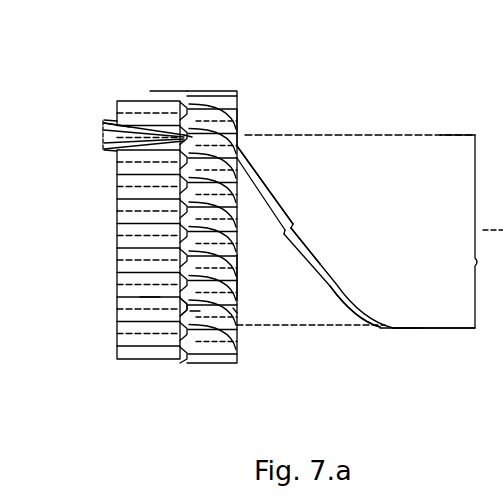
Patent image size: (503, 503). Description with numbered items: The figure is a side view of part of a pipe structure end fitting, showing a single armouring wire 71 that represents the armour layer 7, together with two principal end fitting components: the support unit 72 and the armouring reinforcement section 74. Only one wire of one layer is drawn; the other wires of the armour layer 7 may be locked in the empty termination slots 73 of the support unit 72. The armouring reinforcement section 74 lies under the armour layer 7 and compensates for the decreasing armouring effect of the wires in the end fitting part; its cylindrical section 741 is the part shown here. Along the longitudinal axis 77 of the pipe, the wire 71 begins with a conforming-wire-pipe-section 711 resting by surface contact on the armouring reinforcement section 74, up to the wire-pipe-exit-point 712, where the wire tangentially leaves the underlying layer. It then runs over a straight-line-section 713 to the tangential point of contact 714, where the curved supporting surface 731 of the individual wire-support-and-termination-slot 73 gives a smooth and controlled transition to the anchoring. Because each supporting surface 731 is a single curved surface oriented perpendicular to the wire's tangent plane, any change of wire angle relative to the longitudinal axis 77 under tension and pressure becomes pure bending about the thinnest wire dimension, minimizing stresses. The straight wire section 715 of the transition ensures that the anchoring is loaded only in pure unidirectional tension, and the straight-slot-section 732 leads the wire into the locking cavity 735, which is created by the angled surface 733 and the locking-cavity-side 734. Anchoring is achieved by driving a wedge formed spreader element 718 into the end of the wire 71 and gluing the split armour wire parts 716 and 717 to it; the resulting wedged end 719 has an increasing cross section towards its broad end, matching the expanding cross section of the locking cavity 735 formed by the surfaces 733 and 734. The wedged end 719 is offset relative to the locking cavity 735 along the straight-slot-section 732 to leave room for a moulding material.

The armour layer 7 is at (396, 331).
The armouring wire 71 is at (305, 237).
The conforming-wire-pipe-section 711 is at (338, 284).
The wire-pipe-exit-point 712 is at (288, 227).
The straight-line-section 713 is at (258, 183).
The tangential point of contact 714 is at (238, 125).
The straight wire section 715 is at (192, 137).
The split armour wire part 716 is at (106, 123).
The split armour wire part 717 is at (104, 151).
The wedge formed spreader element 718 is at (103, 137).
The wedged end 719 is at (106, 119).
The support unit 72 is at (186, 72).
The termination slot 73 is at (237, 258).
The supporting surface 731 is at (237, 312).
The straight-slot-section 732 is at (195, 315).
The angled surface 733 is at (180, 318).
The locking-cavity-side 734 is at (145, 310).
The locking cavity 735 is at (157, 91).
The armouring reinforcement section 74 is at (438, 130).
The cylindrical section 741 is at (458, 140).
The longitudinal axis 77 is at (115, 230).